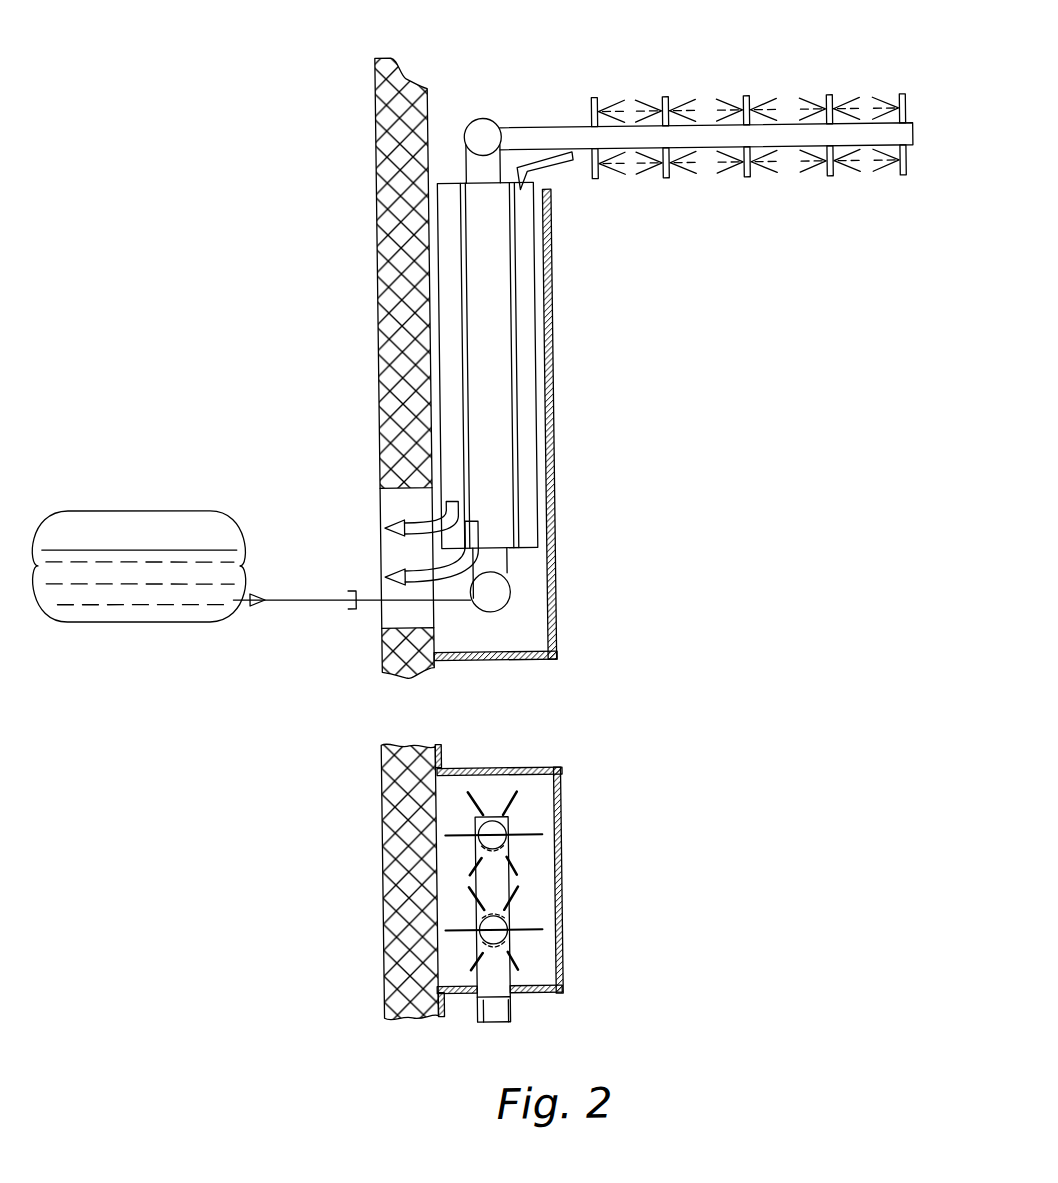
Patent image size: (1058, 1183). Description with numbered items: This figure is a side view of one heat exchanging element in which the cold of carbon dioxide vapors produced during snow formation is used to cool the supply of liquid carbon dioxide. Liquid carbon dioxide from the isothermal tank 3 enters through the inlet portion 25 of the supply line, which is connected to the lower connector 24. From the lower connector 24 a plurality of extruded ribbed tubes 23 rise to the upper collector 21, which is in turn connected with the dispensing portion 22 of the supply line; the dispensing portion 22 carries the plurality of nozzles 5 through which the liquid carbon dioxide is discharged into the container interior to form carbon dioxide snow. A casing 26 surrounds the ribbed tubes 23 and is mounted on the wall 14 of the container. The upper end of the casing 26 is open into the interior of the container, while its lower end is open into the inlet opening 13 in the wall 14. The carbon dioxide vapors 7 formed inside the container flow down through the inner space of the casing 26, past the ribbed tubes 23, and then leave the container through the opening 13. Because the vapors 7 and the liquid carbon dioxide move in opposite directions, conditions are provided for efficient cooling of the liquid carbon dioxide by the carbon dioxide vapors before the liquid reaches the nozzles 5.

The isothermal tank 3 is at (124, 606).
The nozzles 5 is at (684, 102).
The carbon dioxide vapors 7 is at (378, 529).
The inlet opening 13 is at (380, 516).
The wall 14 is at (380, 372).
The upper collector 21 is at (506, 133).
The dispensing portion 22 is at (556, 132).
The extruded ribbed tubes 23 is at (497, 467).
The lower connector 24 is at (498, 598).
The inlet portion 25 is at (370, 604).
The casing 26 is at (554, 429).